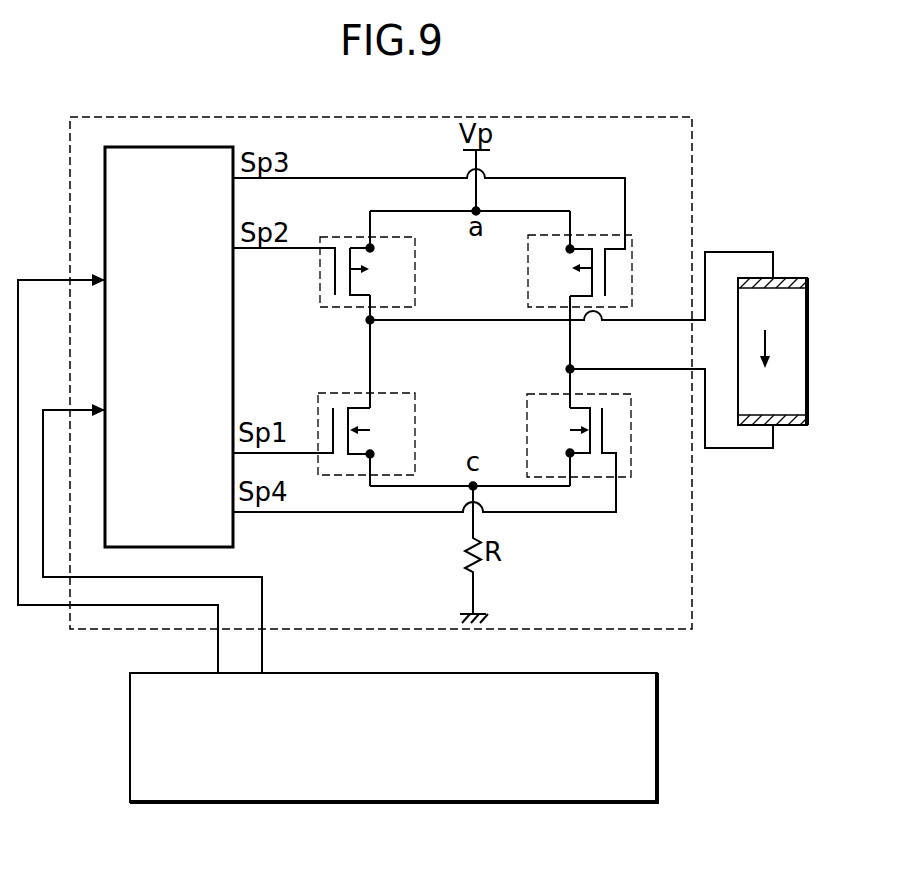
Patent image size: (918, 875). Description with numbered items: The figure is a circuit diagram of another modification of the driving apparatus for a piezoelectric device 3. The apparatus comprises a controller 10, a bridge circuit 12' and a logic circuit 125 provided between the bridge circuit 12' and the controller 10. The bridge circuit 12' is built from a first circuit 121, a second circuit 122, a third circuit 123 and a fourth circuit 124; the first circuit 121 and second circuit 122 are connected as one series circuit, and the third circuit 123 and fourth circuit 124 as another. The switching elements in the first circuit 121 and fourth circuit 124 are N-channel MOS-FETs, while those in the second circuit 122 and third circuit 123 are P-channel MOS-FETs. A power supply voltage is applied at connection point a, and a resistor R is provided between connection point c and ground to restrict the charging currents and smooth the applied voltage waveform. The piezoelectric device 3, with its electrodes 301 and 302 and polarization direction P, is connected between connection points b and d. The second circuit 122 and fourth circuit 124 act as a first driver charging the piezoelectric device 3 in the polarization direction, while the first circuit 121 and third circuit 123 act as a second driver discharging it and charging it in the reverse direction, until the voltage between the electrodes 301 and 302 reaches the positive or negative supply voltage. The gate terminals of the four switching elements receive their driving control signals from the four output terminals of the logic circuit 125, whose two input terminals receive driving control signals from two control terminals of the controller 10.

The bridge circuit 12' is at (381, 350).
The logic circuit 125 is at (148, 147).
The first circuit 121 is at (415, 407).
The second circuit 122 is at (415, 305).
The third circuit 123 is at (632, 262).
The fourth circuit 124 is at (631, 447).
The piezoelectric device 3 is at (803, 335).
The electrode 301 is at (807, 422).
The electrode 302 is at (795, 278).
The controller 10 is at (657, 740).